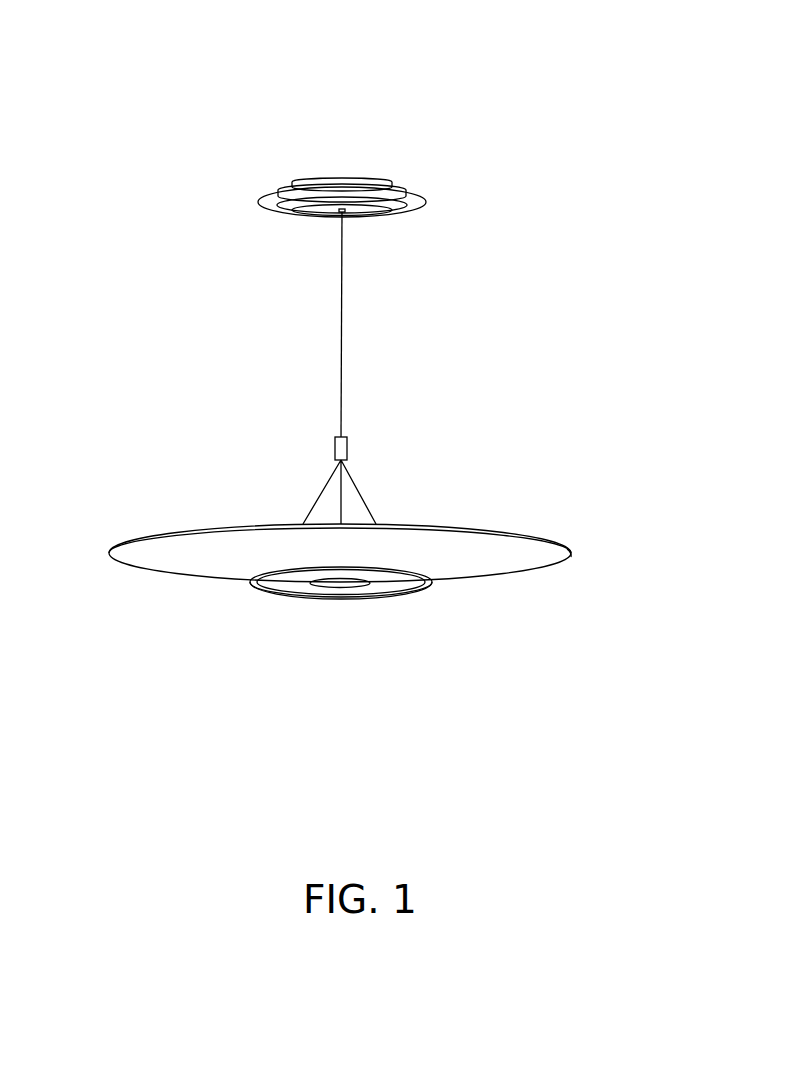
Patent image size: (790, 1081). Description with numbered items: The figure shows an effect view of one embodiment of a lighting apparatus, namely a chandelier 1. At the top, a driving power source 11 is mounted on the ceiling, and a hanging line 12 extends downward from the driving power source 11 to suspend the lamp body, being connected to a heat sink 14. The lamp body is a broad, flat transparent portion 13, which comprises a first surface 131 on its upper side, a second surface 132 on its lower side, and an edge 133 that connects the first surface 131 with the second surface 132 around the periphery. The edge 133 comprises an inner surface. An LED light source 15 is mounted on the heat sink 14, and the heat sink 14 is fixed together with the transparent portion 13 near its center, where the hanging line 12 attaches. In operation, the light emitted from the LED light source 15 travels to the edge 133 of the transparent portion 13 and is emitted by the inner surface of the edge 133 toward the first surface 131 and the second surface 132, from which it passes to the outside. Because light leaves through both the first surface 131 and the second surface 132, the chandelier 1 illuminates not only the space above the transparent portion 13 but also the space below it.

The chandelier 1 is at (150, 72).
The driving power source 11 is at (368, 198).
The hanging line 12 is at (383, 442).
The transparent portion 13 is at (568, 538).
The first surface 131 is at (480, 528).
The second surface 132 is at (520, 567).
The edge 133 is at (571, 557).
The heat sink 14 is at (385, 583).
The LED light source 15 is at (432, 585).